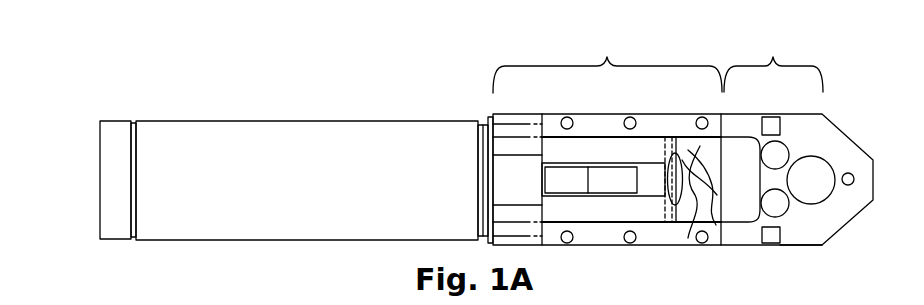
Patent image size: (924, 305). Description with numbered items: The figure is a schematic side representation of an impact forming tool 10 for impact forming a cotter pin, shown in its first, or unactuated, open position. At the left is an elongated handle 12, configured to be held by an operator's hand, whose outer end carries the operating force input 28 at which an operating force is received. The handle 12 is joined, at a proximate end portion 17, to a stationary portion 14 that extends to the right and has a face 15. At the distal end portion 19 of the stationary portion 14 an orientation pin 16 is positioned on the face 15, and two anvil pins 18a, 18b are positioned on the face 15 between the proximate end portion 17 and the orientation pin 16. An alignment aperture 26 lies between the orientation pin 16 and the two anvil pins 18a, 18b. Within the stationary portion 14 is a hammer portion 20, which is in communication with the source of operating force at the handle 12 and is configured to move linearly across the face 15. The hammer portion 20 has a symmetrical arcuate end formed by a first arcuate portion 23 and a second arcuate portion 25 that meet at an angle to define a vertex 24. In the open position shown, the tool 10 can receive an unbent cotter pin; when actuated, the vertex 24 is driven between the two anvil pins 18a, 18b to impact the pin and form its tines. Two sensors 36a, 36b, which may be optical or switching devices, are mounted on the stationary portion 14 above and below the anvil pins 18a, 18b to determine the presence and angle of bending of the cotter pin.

The impact forming tool 10 is at (655, 62).
The handle 12 is at (252, 121).
The stationary portion 14 is at (818, 124).
The face 15 is at (795, 246).
The orientation pin 16 is at (852, 175).
The proximate end portion 17 is at (607, 65).
The anvil pin 18a is at (780, 152).
The anvil pin 18b is at (782, 207).
The distal end portion 19 is at (773, 65).
The hammer portion 20 is at (645, 150).
The first arcuate portion 23 is at (688, 150).
The vertex 24 is at (716, 225).
The second arcuate portion 25 is at (688, 238).
The alignment aperture 26 is at (826, 163).
The operating force input 28 is at (100, 181).
The sensor 36a is at (770, 117).
The sensor 36b is at (768, 243).